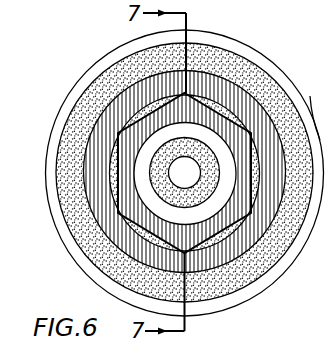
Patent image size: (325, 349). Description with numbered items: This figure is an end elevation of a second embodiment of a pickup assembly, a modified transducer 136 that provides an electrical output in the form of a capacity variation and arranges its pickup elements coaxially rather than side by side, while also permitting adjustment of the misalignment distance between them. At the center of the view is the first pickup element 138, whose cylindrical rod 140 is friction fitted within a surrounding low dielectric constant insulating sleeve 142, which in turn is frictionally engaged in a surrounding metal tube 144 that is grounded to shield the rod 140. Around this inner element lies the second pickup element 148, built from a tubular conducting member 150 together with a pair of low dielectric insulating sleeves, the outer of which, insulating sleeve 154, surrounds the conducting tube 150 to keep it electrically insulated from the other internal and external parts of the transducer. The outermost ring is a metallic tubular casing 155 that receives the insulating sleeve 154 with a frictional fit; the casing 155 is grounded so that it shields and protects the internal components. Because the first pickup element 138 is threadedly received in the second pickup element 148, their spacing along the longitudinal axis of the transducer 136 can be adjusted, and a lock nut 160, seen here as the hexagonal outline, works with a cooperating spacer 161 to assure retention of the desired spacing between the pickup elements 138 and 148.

The transducer 136 is at (118, 60).
The first pickup element 138 is at (156, 142).
The cylindrical rod 140 is at (201, 180).
The insulating sleeve 142 is at (220, 163).
The metal tube 144 is at (223, 149).
The second pickup element 148 is at (204, 92).
The tubular conducting member 150 is at (231, 92).
The insulating sleeve 154 is at (264, 76).
The metallic tubular casing 155 is at (302, 95).
The lock nut 160 is at (226, 117).
The spacer 161 is at (164, 103).